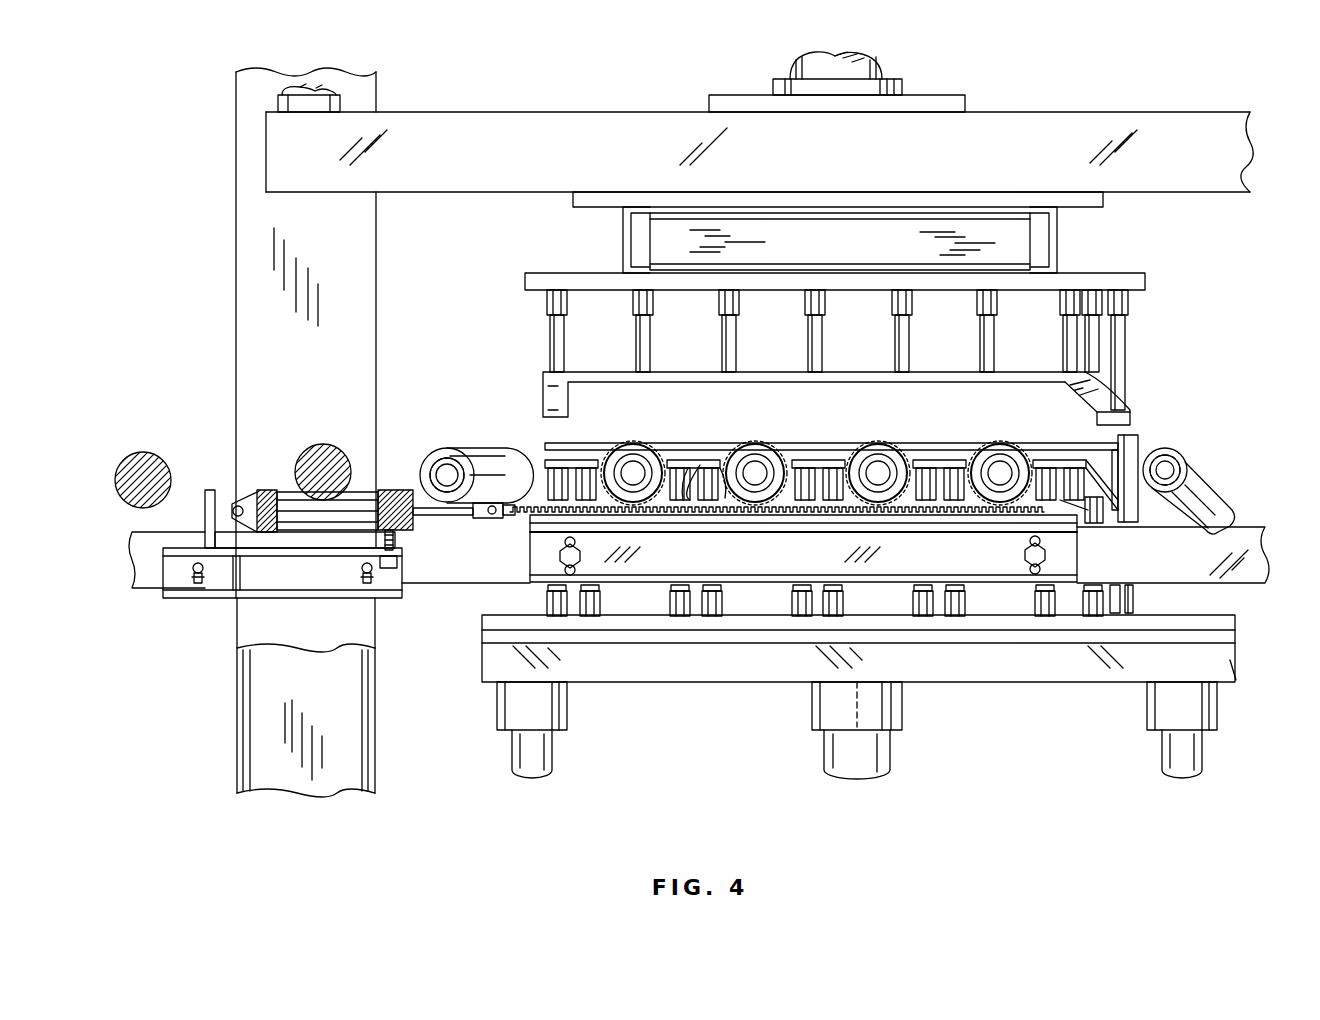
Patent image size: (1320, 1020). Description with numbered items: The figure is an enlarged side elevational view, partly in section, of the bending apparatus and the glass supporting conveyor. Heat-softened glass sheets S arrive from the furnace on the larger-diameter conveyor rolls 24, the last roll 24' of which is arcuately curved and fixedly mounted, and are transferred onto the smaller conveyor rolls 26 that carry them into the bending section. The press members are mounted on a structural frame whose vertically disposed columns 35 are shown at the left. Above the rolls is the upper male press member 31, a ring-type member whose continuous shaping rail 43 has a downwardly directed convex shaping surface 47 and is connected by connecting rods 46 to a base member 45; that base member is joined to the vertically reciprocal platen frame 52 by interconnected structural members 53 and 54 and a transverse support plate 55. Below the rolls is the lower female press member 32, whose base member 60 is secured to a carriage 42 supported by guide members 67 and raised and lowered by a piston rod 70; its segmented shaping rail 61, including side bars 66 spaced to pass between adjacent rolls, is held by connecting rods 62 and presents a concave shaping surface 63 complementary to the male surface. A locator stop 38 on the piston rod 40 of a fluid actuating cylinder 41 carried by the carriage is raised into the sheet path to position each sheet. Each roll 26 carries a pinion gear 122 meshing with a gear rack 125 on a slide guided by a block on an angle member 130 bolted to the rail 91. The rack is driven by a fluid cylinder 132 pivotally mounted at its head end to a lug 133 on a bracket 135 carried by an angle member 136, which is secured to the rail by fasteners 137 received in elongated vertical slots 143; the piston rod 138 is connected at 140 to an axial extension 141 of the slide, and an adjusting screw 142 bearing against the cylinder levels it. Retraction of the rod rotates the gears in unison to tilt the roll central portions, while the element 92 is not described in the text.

The conveyor rolls 24 is at (207, 449).
The last roll 24' is at (436, 445).
The conveyor rolls 26 is at (682, 456).
The upper male press member 31 is at (810, 322).
The lower female press member 32 is at (799, 483).
The columns 35 is at (242, 292).
The locator stops 38 is at (1133, 443).
The piston rod 40 is at (1128, 527).
The fluid actuating cylinder 41 is at (1140, 601).
The carriage 42 is at (1228, 660).
The shaping rail 43 is at (990, 378).
The base member 45 is at (1108, 275).
The connecting rods 46 is at (722, 333).
The shaping surface 47 is at (1086, 404).
The platen frame 52 is at (1073, 120).
The structural member 53 is at (815, 252).
The structural member 54 is at (648, 254).
The support plate 55 is at (895, 197).
The base member 60 is at (1230, 620).
The shaping rail 61 is at (1100, 483).
The connecting rods 62 is at (800, 502).
The shaping surface 63 is at (710, 467).
The side bars 66 is at (693, 503).
The guide members 67 is at (555, 754).
The piston rod 70 is at (835, 746).
The rail 91 is at (135, 552).
The cylinder 92 is at (395, 475).
The pinion gear 122 is at (633, 465).
The gear rack 125 is at (520, 514).
The angle member 130 is at (1070, 542).
The fluid cylinder 132 is at (293, 500).
The lug 133 is at (232, 495).
The bracket 135 is at (197, 518).
The angle member 136 is at (225, 598).
The fasteners 137 is at (195, 577).
The piston rod 138 is at (447, 515).
The connection 140 is at (487, 503).
The axial extension 141 is at (500, 521).
The adjusting screw 142 is at (396, 537).
The elongated vertical slots 143 is at (200, 582).
The glass sheets S is at (712, 450).